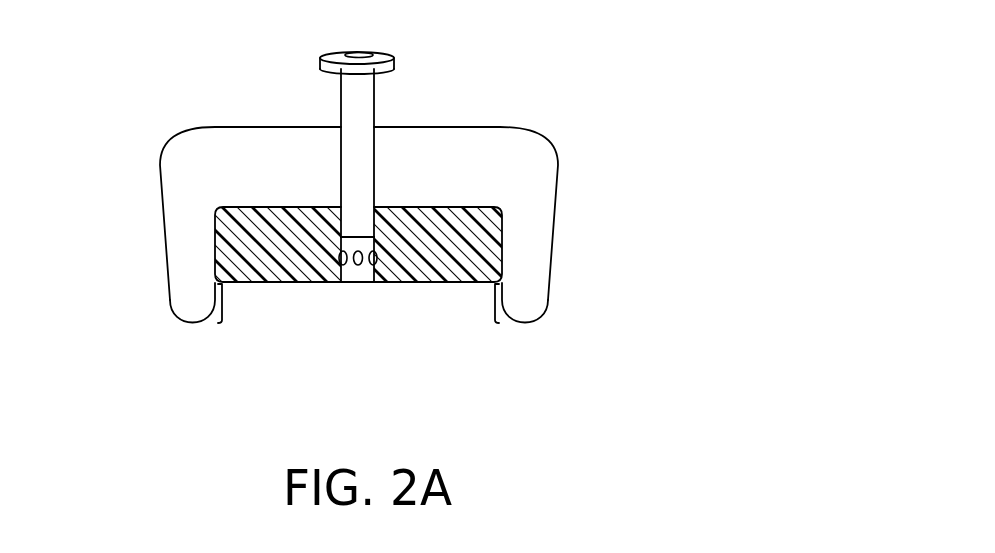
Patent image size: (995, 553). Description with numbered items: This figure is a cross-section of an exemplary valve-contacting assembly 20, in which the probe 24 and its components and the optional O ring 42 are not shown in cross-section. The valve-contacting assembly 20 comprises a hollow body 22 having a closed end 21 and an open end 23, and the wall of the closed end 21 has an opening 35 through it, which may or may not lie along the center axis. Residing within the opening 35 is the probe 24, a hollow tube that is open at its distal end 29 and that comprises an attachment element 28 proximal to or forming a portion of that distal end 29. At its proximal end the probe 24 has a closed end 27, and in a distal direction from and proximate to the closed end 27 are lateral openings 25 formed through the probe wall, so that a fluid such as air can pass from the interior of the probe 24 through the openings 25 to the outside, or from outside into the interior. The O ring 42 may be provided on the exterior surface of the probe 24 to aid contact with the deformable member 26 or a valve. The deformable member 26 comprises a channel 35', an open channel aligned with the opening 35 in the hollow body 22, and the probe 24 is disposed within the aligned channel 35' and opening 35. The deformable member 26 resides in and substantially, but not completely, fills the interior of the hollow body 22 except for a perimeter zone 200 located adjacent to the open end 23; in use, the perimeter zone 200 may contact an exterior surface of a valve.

The valve-contacting assembly 20 is at (620, 130).
The closed end 21 is at (482, 207).
The hollow body 22 is at (175, 205).
The open end 23 is at (195, 307).
The probe 24 is at (357, 90).
The lateral openings 25 is at (368, 283).
The deformable member 26 is at (223, 253).
The closed end 27 is at (353, 283).
The attachment element 28 is at (397, 63).
The distal end 29 is at (357, 52).
The opening 35 is at (294, 91).
The channel 35' is at (309, 331).
The O ring 42 is at (360, 263).
The perimeter zone 200 is at (225, 302).